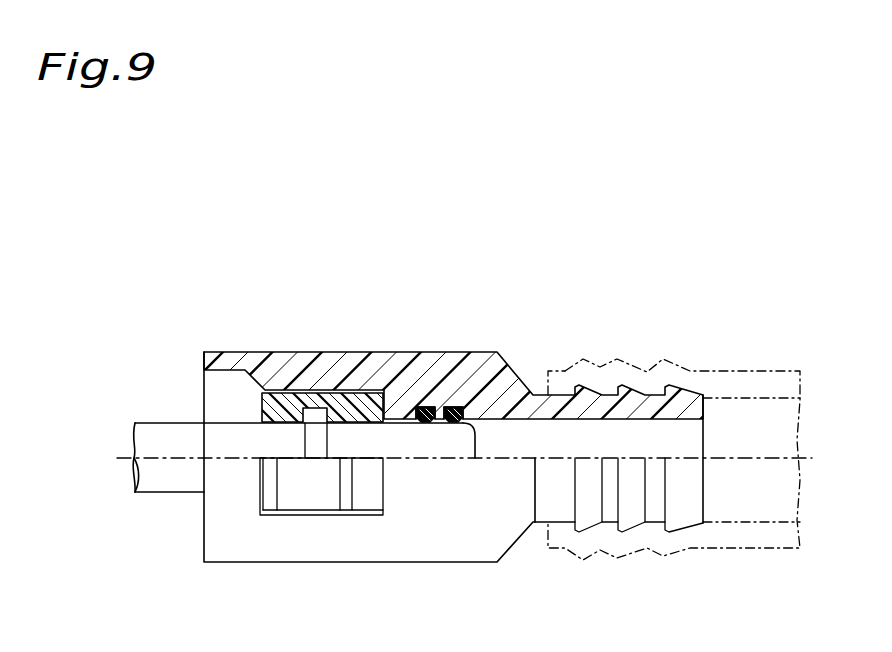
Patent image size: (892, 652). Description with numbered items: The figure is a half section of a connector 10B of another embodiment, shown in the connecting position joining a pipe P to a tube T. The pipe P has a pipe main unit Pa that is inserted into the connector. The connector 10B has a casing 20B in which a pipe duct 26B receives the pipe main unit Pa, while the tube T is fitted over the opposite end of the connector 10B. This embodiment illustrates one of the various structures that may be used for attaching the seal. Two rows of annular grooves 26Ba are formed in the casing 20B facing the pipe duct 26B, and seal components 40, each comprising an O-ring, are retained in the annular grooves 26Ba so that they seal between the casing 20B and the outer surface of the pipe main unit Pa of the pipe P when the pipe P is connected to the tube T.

The connector 10B is at (459, 433).
The connector body 20B is at (445, 353).
The pipe duct 26B is at (595, 428).
The annular grooves 26Ba is at (420, 423).
The seal components 40 is at (425, 423).
The pipe P is at (291, 431).
The pipe main unit Pa is at (157, 432).
The hose T is at (748, 382).